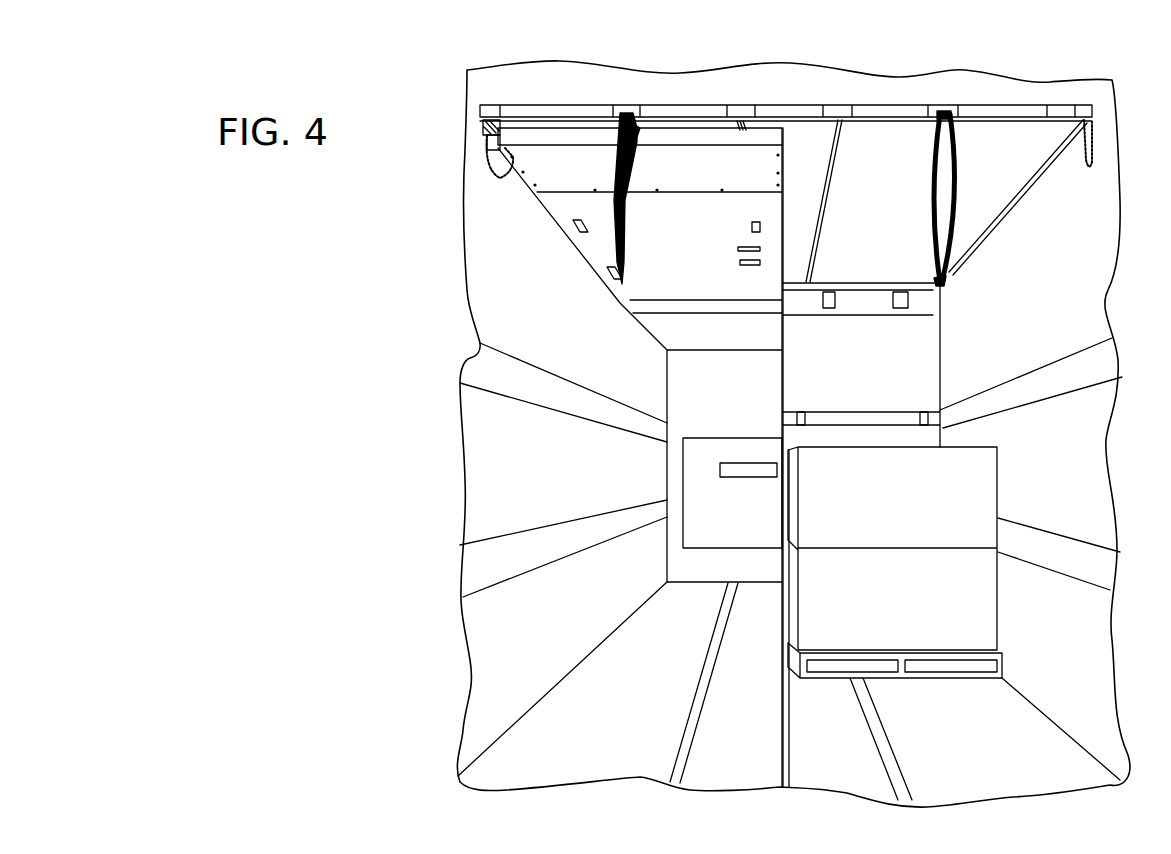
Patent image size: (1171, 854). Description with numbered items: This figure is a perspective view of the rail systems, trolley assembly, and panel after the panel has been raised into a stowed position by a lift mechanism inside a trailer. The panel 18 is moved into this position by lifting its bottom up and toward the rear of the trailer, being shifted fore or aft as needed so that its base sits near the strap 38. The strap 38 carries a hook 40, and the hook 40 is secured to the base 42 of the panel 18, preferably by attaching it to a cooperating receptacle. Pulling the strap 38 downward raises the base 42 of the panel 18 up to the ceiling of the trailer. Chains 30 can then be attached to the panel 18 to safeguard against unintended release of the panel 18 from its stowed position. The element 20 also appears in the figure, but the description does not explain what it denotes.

The panel 18 is at (653, 273).
The container box 20 is at (915, 343).
The chains 30 is at (483, 168).
The strap 38 is at (613, 178).
The hook 40 is at (632, 123).
The base 42 is at (693, 137).